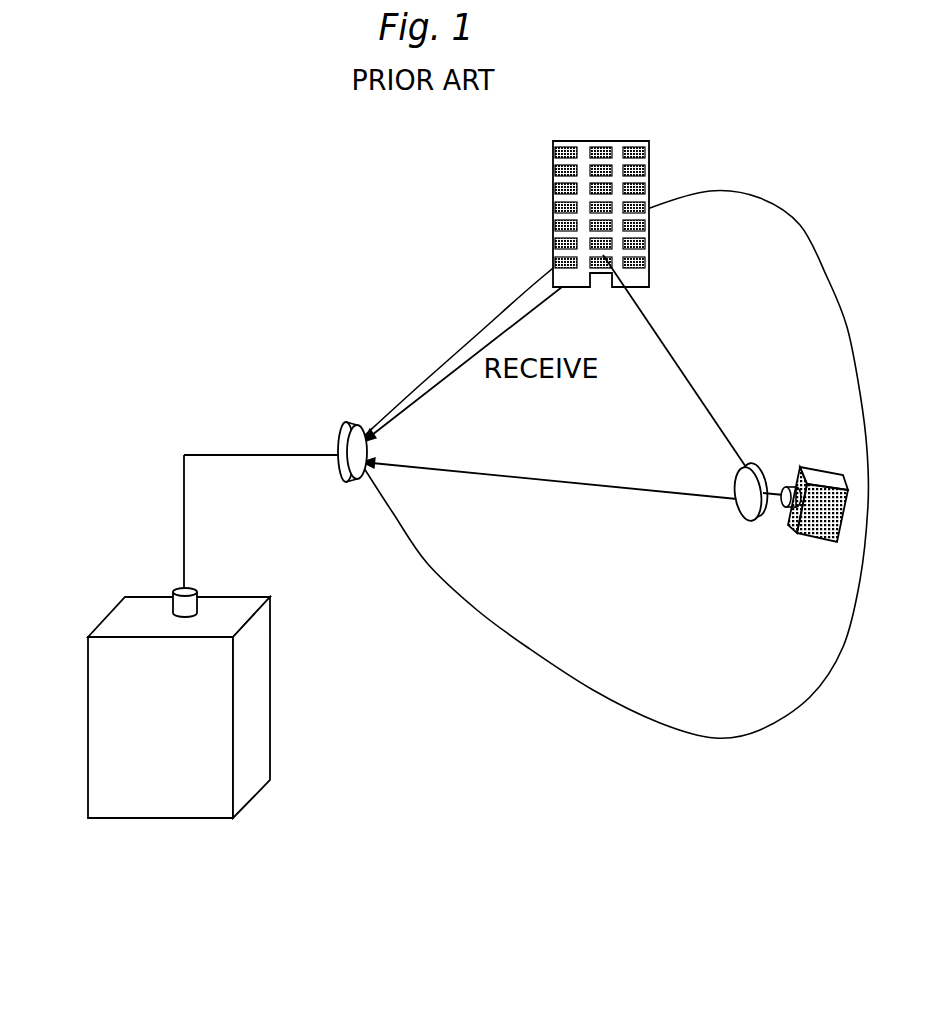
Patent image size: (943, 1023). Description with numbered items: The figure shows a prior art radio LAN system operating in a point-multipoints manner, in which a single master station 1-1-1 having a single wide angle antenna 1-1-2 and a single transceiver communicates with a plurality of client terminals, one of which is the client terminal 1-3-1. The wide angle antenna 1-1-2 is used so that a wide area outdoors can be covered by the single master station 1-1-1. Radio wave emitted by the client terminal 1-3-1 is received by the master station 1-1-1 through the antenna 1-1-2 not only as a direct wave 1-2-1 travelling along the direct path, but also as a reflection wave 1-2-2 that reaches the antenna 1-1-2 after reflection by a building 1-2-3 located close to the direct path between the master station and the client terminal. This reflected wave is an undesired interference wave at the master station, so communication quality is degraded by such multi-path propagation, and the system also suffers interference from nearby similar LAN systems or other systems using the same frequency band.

The master station 1-1-1 is at (247, 673).
The antenna 1-1-2 is at (190, 432).
The direct wave 1-2-1 is at (554, 511).
The reflection wave 1-2-2 is at (718, 364).
The building 1-2-3 is at (668, 214).
The client terminal 1-3-1 is at (789, 518).